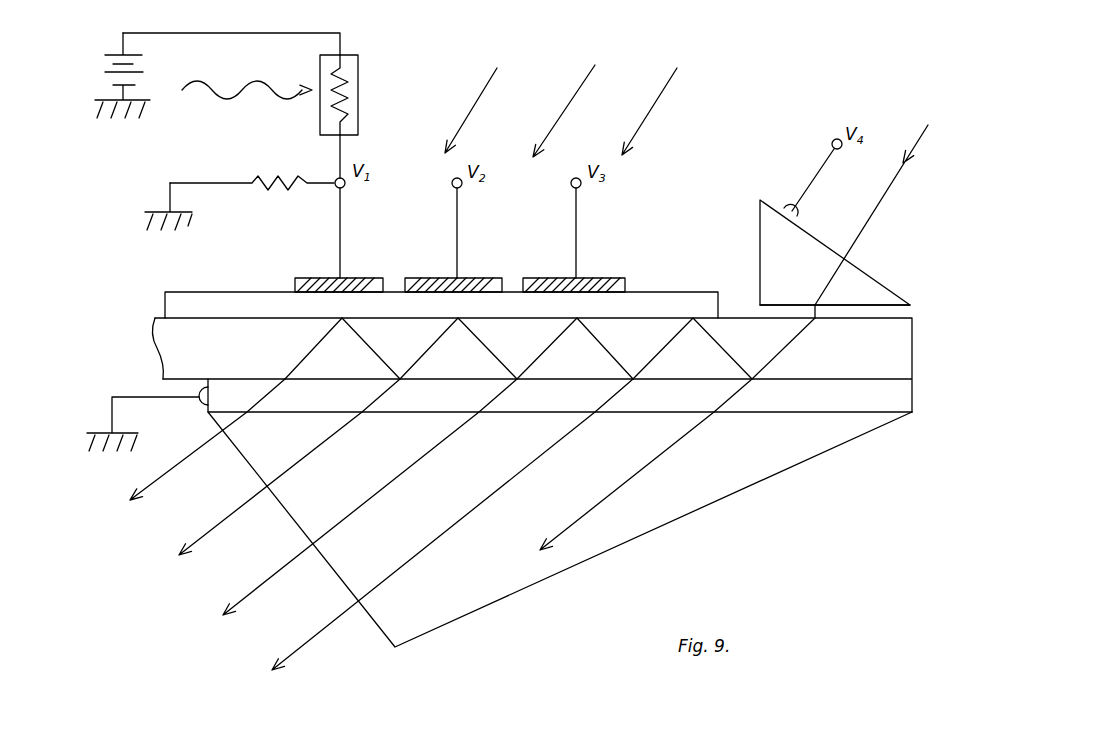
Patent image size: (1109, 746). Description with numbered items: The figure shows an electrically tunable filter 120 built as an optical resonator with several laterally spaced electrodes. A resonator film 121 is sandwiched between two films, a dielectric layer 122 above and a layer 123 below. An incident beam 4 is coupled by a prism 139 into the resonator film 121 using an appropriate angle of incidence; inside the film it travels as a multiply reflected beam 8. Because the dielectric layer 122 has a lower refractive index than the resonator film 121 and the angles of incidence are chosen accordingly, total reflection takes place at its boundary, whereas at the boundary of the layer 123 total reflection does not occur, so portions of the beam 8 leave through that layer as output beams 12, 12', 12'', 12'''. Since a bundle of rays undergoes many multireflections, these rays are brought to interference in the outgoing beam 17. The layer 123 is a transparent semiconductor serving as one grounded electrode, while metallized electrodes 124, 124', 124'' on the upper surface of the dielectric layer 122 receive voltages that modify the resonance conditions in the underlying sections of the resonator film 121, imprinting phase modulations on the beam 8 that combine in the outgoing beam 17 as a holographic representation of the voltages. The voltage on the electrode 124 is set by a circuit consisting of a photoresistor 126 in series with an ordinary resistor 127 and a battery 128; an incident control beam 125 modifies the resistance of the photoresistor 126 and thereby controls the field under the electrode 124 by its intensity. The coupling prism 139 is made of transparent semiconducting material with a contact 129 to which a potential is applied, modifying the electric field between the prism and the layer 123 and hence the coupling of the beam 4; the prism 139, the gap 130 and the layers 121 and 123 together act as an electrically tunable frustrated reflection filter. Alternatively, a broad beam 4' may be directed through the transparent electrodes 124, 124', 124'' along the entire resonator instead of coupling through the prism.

The battery 128 is at (113, 47).
The control beam 125 is at (247, 104).
The photoresistor 126 is at (360, 87).
The ordinary resistor 127 is at (263, 205).
The broad beam 4' is at (577, 87).
The electrode 124 is at (327, 240).
The electrode 124' is at (448, 240).
The electrode 124'' is at (570, 240).
The dielectric layer 122 is at (648, 300).
The resonator film 121 is at (827, 352).
The layer 123 is at (797, 396).
The electrically tunable filter 120 is at (153, 277).
The multiply reflected beam 8 is at (600, 343).
The coupling prism 139 is at (865, 285).
The contact 129 is at (788, 205).
The gap 130 is at (903, 312).
The incident beam 4 is at (871, 215).
The output beam 12''' is at (207, 439).
The output beam 12'' is at (289, 467).
The output beam 12' is at (370, 497).
The output beam 12 is at (512, 524).
The outgoing beam 17 is at (280, 693).